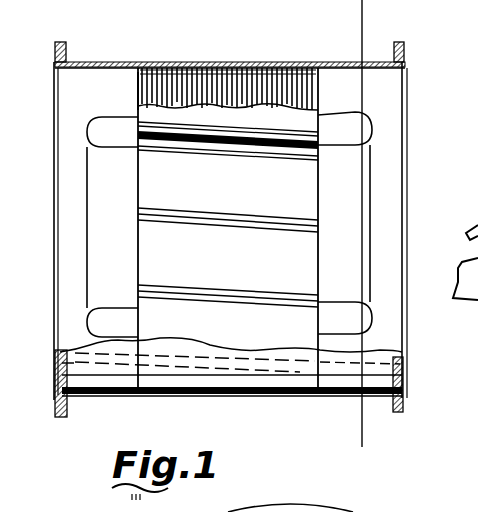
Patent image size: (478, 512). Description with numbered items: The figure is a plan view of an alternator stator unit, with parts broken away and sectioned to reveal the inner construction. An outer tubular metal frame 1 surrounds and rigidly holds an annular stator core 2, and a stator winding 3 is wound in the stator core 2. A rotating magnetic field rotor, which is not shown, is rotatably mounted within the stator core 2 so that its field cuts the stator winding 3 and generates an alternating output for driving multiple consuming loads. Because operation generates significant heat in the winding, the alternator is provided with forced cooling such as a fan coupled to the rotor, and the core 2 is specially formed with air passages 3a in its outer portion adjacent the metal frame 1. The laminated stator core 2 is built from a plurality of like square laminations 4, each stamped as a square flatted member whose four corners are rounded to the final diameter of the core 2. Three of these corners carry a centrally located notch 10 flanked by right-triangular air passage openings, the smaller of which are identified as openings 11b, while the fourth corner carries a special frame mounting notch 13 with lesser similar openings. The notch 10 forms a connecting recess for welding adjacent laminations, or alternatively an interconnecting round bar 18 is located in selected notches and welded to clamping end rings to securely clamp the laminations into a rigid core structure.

The outer tubular metal frame 1 is at (265, 42).
The stator core 2 is at (362, 437).
The stator winding 3 is at (338, 133).
The air passages 3a is at (140, 85).
The square lamination 4 is at (208, 62).
The notch 10 is at (269, 233).
The frame mounting notch 13 is at (254, 159).
The interconnecting round bar 18 is at (163, 299).
The smaller air passage openings 11b is at (258, 505).